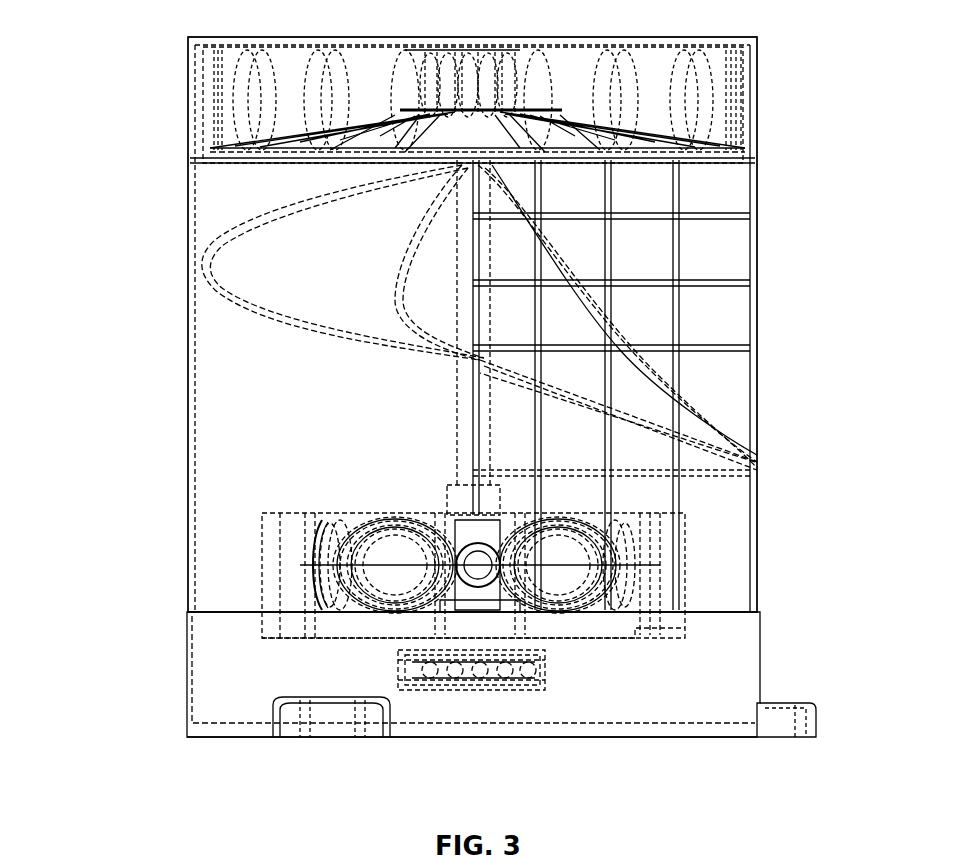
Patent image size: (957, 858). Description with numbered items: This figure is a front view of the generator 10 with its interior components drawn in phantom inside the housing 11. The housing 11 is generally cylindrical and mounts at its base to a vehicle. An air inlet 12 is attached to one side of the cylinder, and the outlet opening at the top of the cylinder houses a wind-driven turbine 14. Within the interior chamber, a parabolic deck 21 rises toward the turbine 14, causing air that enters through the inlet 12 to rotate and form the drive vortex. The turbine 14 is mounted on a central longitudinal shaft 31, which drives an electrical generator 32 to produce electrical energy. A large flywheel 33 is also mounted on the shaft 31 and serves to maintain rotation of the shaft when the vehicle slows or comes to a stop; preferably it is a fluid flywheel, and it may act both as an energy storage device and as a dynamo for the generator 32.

The generator 10 is at (118, 73).
The housing 11 is at (190, 320).
The air inlet 12 is at (755, 330).
The wind-driven turbine 14 is at (740, 96).
The parabolic deck 21 is at (268, 313).
The central longitudinal shaft 31 is at (457, 420).
The electrical generator 32 is at (540, 672).
The flywheel 33 is at (365, 515).